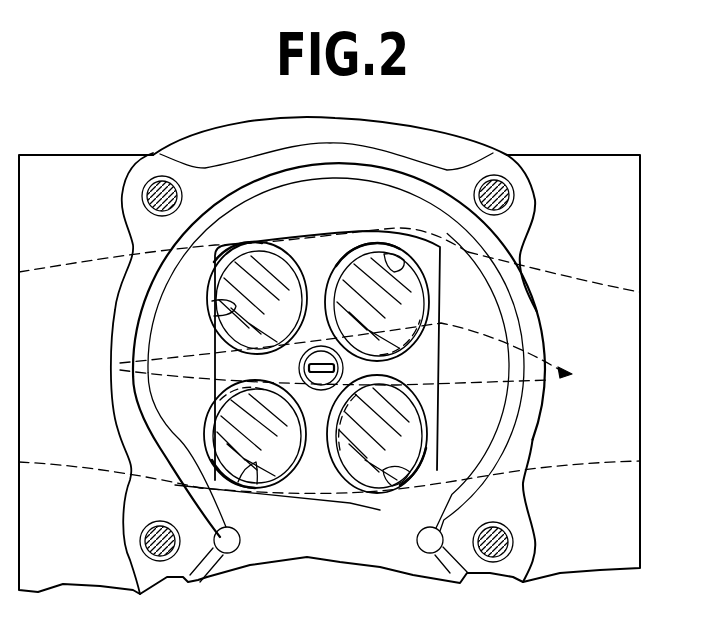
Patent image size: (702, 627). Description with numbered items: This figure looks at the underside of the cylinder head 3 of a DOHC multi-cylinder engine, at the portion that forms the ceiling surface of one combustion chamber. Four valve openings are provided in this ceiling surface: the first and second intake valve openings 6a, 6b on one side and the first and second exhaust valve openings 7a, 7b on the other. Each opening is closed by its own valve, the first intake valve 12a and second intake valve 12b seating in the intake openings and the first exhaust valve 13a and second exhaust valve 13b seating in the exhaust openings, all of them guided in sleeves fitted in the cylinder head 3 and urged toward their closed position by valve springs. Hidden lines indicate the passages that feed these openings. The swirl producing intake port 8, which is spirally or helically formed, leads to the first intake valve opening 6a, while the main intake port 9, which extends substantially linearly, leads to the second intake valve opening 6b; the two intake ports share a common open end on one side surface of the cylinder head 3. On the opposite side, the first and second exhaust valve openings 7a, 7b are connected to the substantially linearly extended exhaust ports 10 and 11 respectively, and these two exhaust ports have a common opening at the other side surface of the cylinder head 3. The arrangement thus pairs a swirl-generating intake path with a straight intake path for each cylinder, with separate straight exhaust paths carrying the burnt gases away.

The cylinder head 3 is at (640, 182).
The first intake valve opening 6a is at (390, 262).
The second intake valve opening 6b is at (388, 476).
The first exhaust valve opening 7a is at (232, 310).
The second exhaust valve opening 7b is at (255, 466).
The swirl producing intake port 8 is at (478, 257).
The main intake port 9 is at (525, 465).
The exhaust port 10 is at (160, 252).
The exhaust port 11 is at (140, 470).
The first intake valve 12a is at (400, 304).
The second intake valve 12b is at (405, 428).
The first exhaust valve 13a is at (266, 262).
The second exhaust valve 13b is at (214, 412).